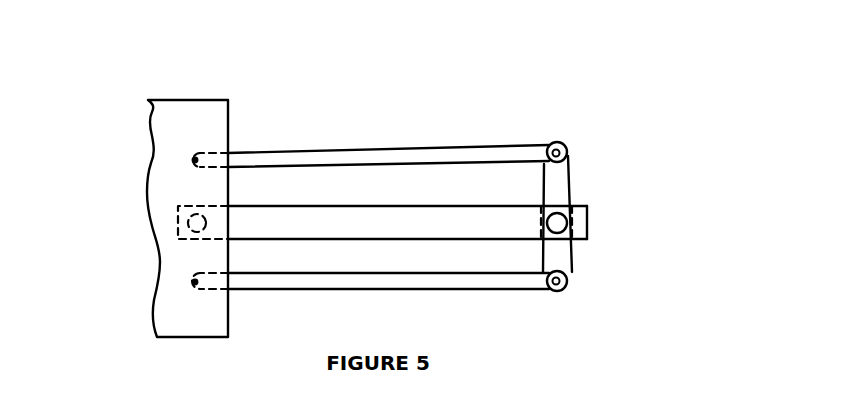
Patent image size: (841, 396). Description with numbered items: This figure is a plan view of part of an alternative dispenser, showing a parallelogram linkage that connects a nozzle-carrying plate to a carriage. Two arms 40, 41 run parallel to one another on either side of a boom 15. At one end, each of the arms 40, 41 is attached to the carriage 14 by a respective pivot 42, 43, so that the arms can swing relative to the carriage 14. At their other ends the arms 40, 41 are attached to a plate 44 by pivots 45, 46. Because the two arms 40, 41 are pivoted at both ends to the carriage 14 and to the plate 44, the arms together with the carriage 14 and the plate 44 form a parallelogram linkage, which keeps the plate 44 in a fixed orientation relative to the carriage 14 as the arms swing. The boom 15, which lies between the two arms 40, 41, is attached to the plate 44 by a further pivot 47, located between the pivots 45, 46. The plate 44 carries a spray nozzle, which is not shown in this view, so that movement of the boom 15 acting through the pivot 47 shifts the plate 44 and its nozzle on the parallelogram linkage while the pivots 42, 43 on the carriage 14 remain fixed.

The carriage 14 is at (193, 124).
The boom 15 is at (368, 218).
The arm 40 is at (409, 157).
The arm 41 is at (405, 281).
The pivot 42 is at (195, 160).
The pivot 43 is at (195, 282).
The plate 44 is at (562, 257).
The pivot 45 is at (566, 148).
The pivot 46 is at (574, 281).
The pivot 47 is at (563, 218).